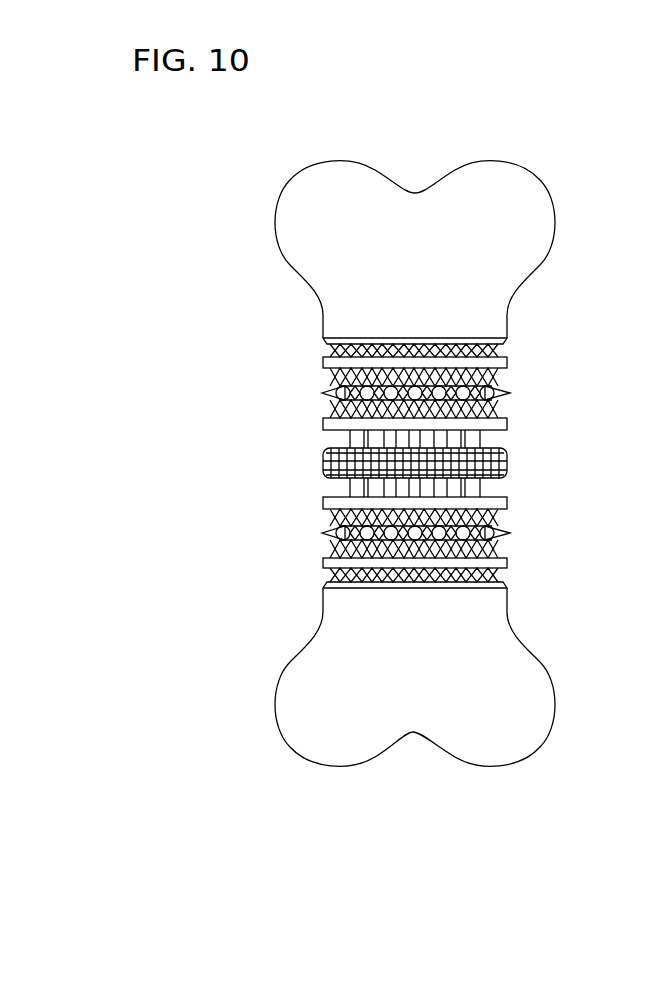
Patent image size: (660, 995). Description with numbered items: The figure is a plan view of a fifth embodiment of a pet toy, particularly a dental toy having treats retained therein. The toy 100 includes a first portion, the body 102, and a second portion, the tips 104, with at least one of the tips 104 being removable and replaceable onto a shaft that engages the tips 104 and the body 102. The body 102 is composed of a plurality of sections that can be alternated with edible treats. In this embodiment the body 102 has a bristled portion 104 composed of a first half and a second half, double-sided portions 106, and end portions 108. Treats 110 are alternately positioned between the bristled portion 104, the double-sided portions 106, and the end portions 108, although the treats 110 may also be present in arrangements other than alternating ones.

The toy 100 is at (500, 126).
The body 102 is at (308, 340).
The tips 104 is at (553, 212).
The double-sided portions 106 is at (507, 393).
The end portions 108 is at (507, 340).
The treats 110 is at (507, 363).